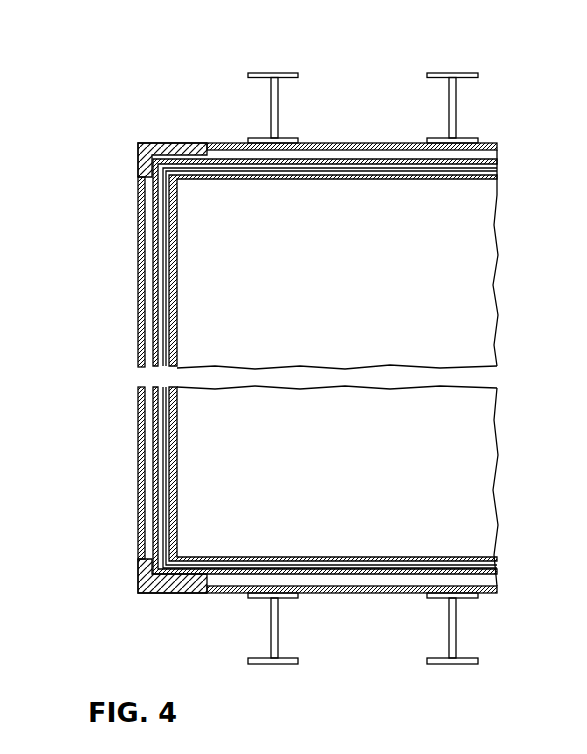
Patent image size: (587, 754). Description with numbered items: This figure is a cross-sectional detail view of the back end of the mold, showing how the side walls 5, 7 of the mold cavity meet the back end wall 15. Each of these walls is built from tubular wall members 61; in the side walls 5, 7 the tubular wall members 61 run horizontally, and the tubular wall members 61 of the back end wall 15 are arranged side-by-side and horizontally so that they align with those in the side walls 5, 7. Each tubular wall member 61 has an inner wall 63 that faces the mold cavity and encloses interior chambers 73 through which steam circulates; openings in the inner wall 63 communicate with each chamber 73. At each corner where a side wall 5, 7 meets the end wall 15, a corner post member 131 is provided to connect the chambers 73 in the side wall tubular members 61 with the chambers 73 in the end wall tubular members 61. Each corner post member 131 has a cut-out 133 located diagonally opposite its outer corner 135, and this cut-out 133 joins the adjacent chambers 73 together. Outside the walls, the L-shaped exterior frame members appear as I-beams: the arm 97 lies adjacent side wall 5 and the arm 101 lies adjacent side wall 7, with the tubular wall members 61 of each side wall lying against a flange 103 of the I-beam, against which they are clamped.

The side wall 5 is at (363, 132).
The side wall 7 is at (376, 597).
The back end wall 15 is at (138, 470).
The tubular wall member 61 is at (432, 173).
The inner wall 63 is at (353, 174).
The chamber 73 is at (232, 171).
The arm 97 is at (450, 74).
The arm 101 is at (443, 665).
The flange 103 is at (467, 138).
The corner post member 131 is at (138, 160).
The cut-out 133 is at (158, 176).
The outer corner 135 is at (138, 143).